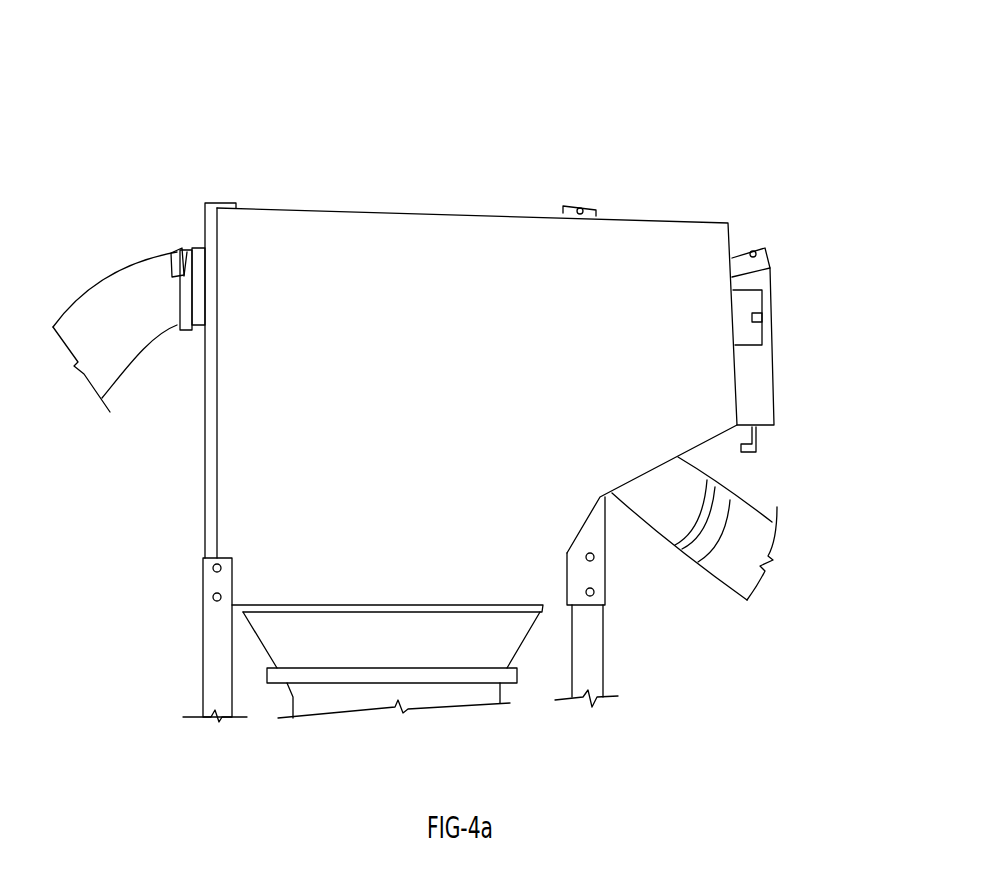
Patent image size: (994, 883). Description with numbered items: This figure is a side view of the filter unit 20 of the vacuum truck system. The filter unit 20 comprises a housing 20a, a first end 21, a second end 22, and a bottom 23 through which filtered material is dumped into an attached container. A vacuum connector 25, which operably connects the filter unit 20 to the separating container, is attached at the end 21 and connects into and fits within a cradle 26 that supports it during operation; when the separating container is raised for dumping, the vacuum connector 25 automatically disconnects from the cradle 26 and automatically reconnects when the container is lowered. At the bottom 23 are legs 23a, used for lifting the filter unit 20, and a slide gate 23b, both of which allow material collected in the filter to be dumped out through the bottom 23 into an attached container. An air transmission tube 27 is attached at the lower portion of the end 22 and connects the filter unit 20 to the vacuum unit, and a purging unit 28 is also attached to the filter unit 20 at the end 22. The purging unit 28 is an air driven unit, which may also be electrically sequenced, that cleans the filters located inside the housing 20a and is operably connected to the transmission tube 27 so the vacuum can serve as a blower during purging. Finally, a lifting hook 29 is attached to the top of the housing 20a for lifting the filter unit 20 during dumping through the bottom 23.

The filter unit 20 is at (502, 312).
The housing 20a is at (362, 280).
The end 21 is at (205, 445).
The end 22 is at (773, 380).
The bottom 23 is at (342, 715).
The legs 23a is at (215, 664).
The slide gate 23b is at (275, 687).
The vacuum connector 25 is at (120, 273).
The cradle 26 is at (183, 258).
The air transmission tube 27 is at (752, 538).
The purging unit 28 is at (755, 318).
The lifting hook 29 is at (582, 206).